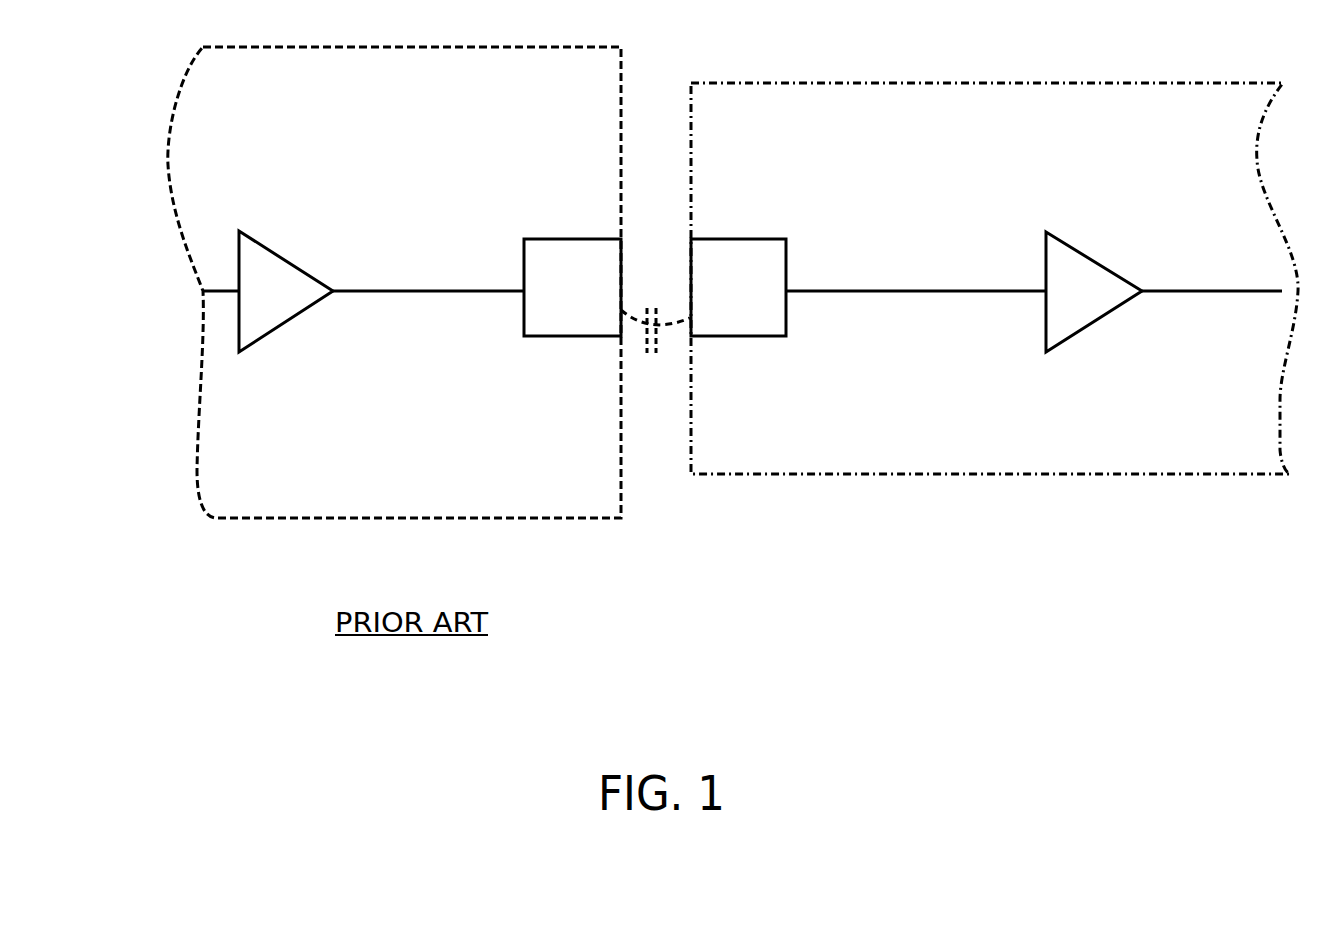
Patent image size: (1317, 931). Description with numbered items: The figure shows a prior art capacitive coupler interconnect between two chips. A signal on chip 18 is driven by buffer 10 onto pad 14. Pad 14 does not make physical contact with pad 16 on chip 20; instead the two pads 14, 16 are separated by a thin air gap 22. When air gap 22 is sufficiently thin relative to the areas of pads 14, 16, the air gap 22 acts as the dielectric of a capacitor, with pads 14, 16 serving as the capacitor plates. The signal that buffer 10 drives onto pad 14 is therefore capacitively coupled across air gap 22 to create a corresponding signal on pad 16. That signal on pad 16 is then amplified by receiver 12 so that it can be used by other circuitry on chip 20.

The buffer 10 is at (265, 306).
The receiver 12 is at (1062, 305).
The pad 14 is at (567, 314).
The pad 16 is at (733, 314).
The chip 18 is at (307, 131).
The chip 20 is at (897, 167).
The air gap 22 is at (637, 280).